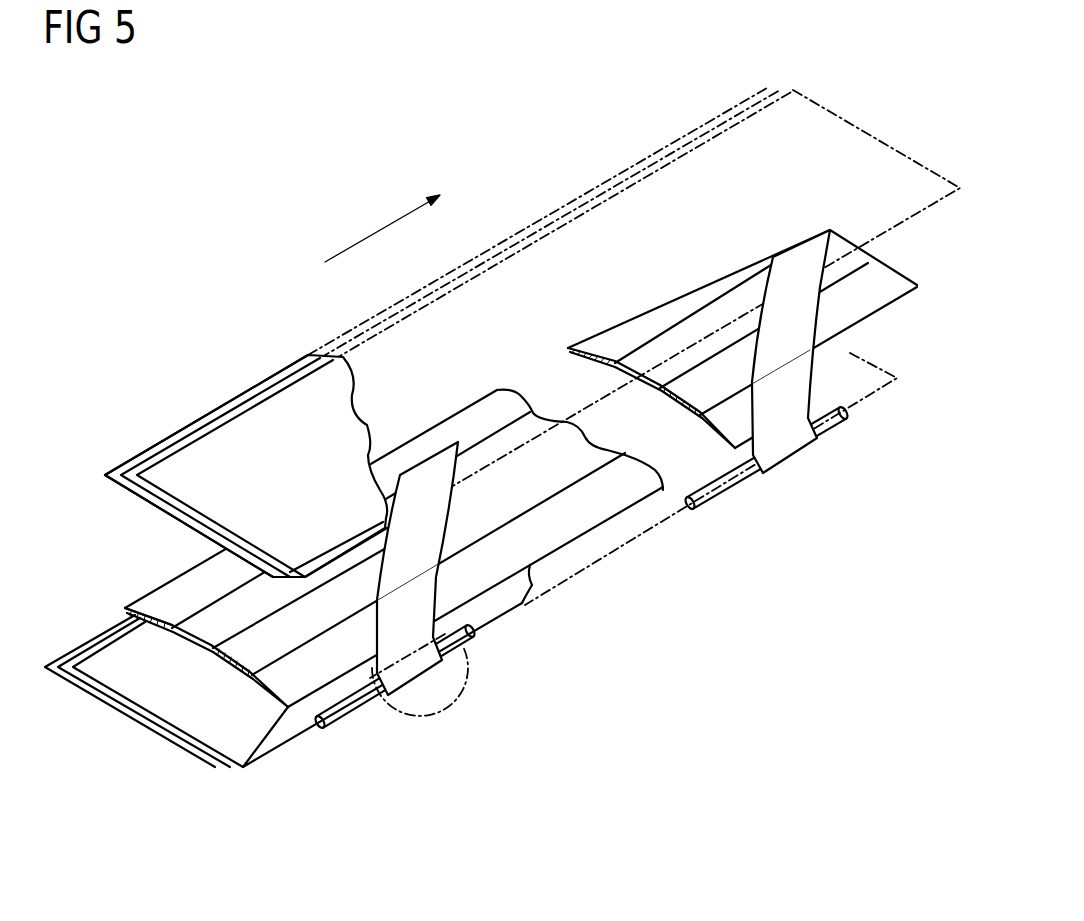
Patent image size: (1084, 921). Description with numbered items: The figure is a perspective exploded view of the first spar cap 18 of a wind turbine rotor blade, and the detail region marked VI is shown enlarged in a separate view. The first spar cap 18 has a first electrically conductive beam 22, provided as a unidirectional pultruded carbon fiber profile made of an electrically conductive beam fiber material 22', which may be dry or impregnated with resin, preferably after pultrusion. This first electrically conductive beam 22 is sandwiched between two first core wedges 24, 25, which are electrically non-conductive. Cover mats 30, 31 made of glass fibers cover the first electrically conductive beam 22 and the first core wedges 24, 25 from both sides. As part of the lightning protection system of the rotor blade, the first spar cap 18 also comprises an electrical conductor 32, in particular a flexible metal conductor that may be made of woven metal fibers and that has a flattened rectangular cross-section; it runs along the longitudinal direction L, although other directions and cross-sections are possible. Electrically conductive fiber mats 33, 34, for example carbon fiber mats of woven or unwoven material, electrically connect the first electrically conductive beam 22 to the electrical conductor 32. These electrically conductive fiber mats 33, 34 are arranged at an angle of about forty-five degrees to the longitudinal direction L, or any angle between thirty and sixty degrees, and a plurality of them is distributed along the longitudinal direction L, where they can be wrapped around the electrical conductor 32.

The first spar cap 18 is at (480, 121).
The longitudinal direction L is at (370, 236).
The first electrically conductive beam 22 is at (191, 706).
The electrically conductive beam fiber material 22' is at (148, 616).
The first core wedge 24 is at (379, 597).
The first core wedge 25 is at (310, 680).
The cover mat 30 is at (103, 665).
The cover mat 31 is at (235, 428).
The electrical conductor 32 is at (355, 703).
The electrically conductive fiber mat 33 is at (413, 560).
The electrically conductive fiber mat 34 is at (787, 375).
The detail section VI is at (432, 700).